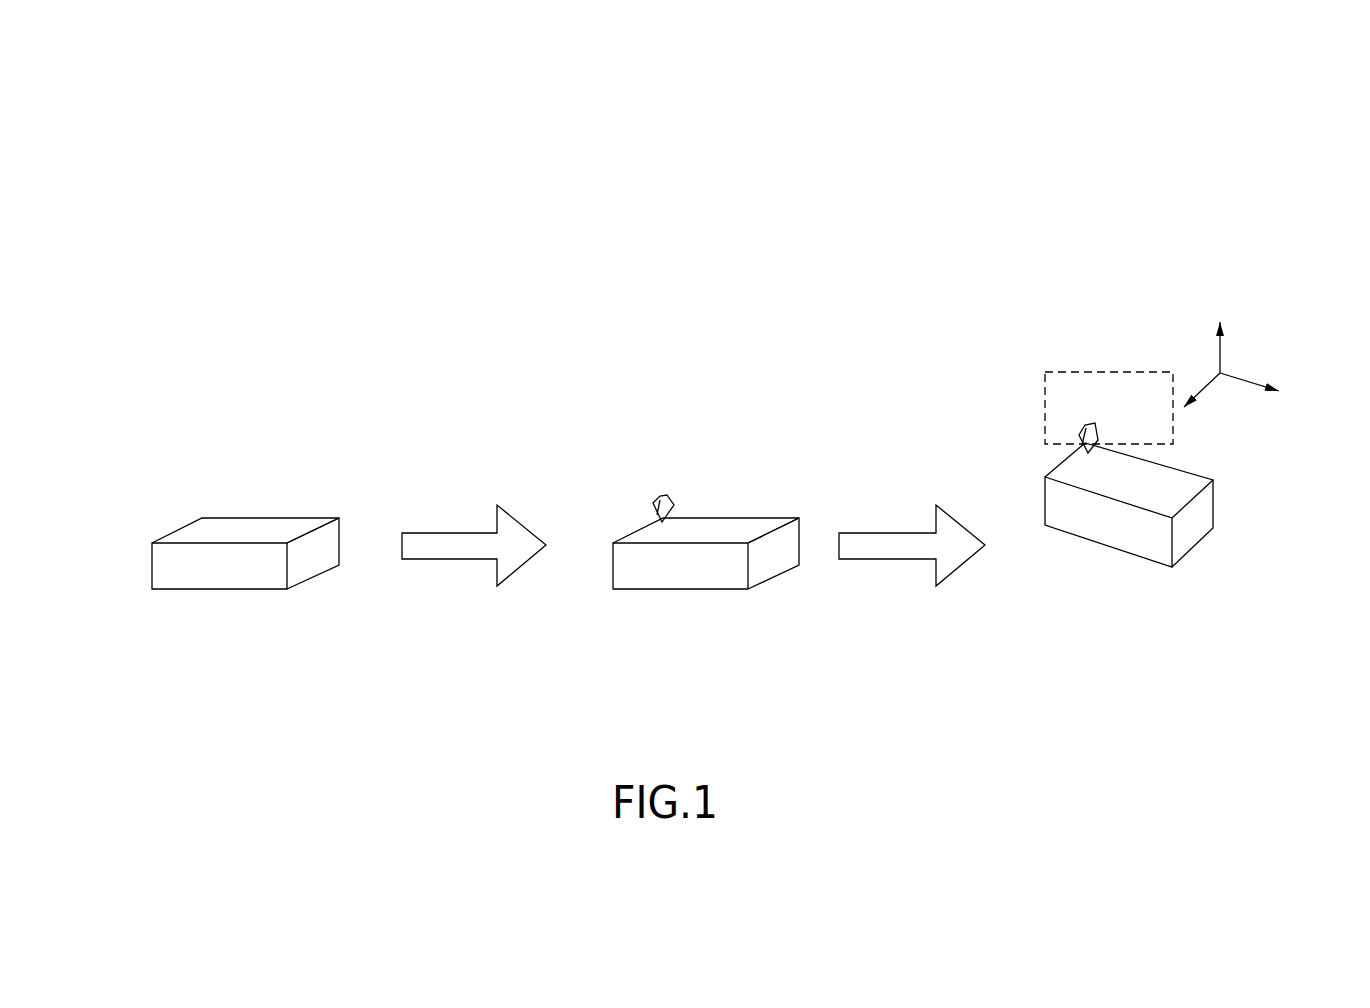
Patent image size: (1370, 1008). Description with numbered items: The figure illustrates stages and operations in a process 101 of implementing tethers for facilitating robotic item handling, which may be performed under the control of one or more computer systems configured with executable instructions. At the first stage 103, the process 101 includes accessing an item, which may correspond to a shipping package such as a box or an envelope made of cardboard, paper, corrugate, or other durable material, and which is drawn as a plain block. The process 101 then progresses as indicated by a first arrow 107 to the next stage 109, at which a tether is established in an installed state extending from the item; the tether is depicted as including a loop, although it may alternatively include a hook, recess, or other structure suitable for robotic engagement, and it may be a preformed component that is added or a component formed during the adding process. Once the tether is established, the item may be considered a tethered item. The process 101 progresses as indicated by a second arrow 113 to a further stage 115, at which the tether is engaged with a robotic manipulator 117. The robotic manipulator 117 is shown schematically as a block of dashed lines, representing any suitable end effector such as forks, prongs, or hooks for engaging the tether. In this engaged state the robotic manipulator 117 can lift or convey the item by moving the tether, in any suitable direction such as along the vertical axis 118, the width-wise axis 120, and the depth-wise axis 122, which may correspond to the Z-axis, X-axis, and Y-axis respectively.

The process 101 is at (710, 188).
The accessing operation 103 is at (231, 432).
The progression to subsequent operations 107 is at (455, 550).
The tether establishing operation 109 is at (715, 428).
The progression to subsequent operations 113 is at (890, 550).
The tether engaging operation 115 is at (1150, 312).
The robotic manipulator 117 is at (1045, 385).
The vertical axis 118 is at (1222, 350).
The width-wise axis 120 is at (1237, 380).
The depth-wise axis 122 is at (1210, 387).